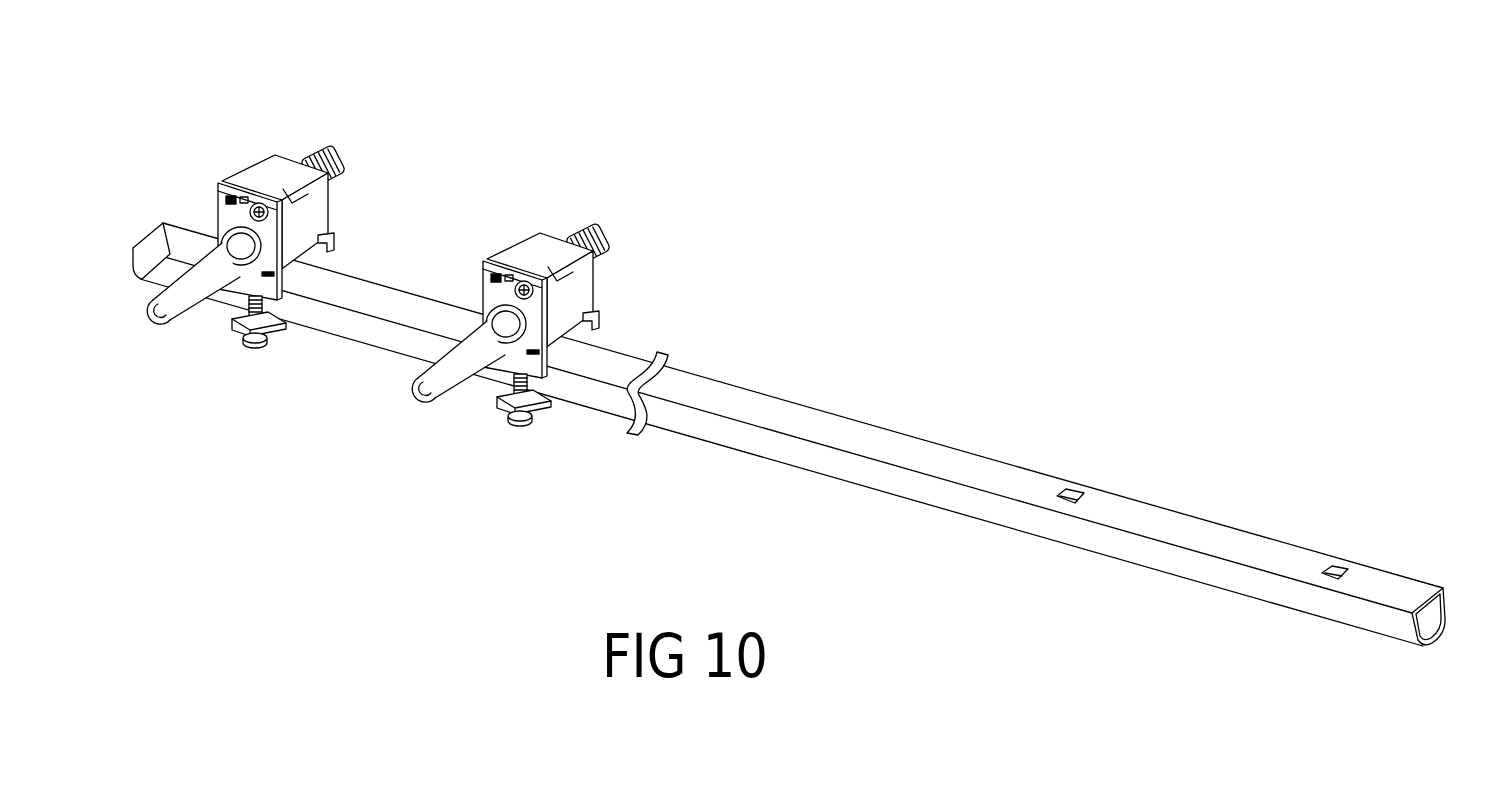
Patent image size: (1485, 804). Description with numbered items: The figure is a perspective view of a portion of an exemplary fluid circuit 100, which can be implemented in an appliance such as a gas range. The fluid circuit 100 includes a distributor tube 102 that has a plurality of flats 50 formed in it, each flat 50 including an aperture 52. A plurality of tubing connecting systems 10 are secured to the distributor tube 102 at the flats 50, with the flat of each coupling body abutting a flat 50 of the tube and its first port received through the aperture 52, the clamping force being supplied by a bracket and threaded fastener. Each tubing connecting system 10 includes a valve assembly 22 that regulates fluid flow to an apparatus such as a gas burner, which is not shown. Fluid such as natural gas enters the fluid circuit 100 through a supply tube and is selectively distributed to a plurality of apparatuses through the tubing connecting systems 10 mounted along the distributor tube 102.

The tubing connecting system 10 is at (291, 145).
The valve assembly 22 is at (227, 210).
The flat 50 is at (796, 434).
The aperture 52 is at (1066, 493).
The fluid circuit 100 is at (796, 351).
The distributor tube 102 is at (707, 441).